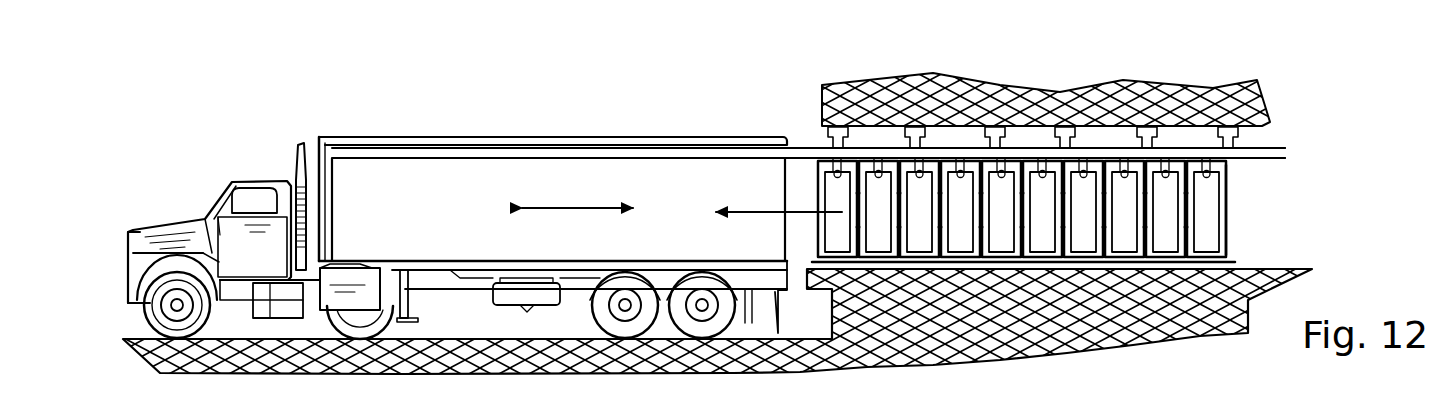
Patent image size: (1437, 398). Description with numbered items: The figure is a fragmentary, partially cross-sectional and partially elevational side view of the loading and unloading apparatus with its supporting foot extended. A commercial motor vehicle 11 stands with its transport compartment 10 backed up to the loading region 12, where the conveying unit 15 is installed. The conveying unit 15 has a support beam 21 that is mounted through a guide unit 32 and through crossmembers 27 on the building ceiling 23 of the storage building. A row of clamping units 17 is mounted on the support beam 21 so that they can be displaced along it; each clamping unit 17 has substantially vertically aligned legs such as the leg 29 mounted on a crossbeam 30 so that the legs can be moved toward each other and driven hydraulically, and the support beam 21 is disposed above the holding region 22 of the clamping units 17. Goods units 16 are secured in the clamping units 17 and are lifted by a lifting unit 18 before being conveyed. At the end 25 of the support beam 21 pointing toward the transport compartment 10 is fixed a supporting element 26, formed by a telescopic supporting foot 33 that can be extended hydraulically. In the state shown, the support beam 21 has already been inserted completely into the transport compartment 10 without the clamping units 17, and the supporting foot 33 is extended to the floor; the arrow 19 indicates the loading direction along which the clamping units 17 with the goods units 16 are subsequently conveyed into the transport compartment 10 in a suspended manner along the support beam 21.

The transport compartment 10 is at (430, 202).
The commercial motor vehicle 11 is at (263, 170).
The loading region 12 is at (1250, 262).
The conveying unit 15 is at (996, 156).
The goods unit 16 is at (1106, 176).
The clamping unit 17 is at (1234, 187).
The lifting unit 18 is at (997, 136).
The movement direction arrow 19 is at (562, 203).
The support beam 21 is at (592, 153).
The holding region 22 is at (1233, 204).
The building ceiling 23 is at (843, 98).
The end 25 is at (322, 132).
The supporting element 26 is at (341, 182).
The crossmember 27 is at (1168, 203).
The leg 29 is at (1281, 154).
The crossbeam 30 is at (880, 172).
The guide unit 32 is at (1062, 170).
The supporting foot 33 is at (300, 152).